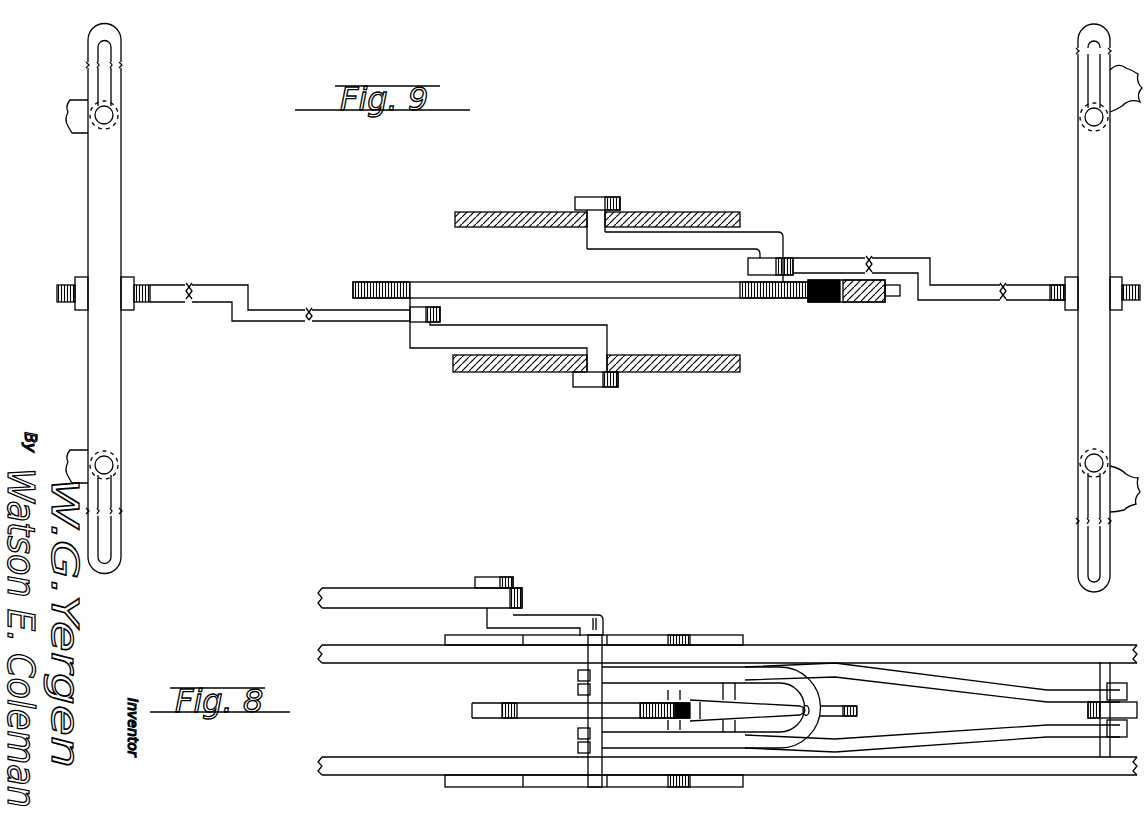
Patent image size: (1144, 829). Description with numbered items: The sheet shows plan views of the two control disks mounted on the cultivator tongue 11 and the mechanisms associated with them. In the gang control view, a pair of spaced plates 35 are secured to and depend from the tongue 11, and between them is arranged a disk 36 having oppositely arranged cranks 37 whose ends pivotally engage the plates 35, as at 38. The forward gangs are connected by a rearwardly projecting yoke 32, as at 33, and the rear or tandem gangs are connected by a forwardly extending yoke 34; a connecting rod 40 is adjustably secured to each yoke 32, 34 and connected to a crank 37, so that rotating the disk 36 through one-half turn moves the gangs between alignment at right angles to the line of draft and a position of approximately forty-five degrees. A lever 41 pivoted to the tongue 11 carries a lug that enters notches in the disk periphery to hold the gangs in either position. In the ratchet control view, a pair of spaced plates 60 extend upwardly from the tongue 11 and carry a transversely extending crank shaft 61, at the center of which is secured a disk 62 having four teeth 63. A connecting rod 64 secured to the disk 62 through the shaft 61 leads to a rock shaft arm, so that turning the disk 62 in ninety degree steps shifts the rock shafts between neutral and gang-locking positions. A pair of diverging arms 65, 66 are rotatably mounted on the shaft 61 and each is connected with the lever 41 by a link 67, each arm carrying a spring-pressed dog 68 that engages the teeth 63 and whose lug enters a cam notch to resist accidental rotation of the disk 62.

In FIG. 8, the tongue 11 is at (915, 656).
In FIG. 9, the yoke 32 is at (100, 197).
In FIG. 9, the yoke connection 33 is at (113, 113).
In FIG. 9, the forwardly extending yoke 34 is at (1080, 337).
In FIG. 9, the spaced plates 35 is at (686, 210).
In FIG. 9, the disk 36 is at (483, 280).
In FIG. 9, the cranks 37 is at (700, 246).
In FIG. 9, the pivot 38 is at (597, 196).
In FIG. 9, the connecting rod 40 is at (276, 325).
In FIG. 9, the lever 41 is at (870, 302).
In FIG. 8, the lever 41 is at (1083, 722).
In FIG. 8, the spaced plates 60 is at (641, 639).
In FIG. 8, the crank shaft 61 is at (596, 768).
In FIG. 8, the disk 62 is at (538, 718).
In FIG. 8, the teeth 63 is at (506, 720).
In FIG. 8, the connecting rod 64 is at (412, 598).
In FIG. 8, the arm 65 is at (760, 668).
In FIG. 8, the arm 66 is at (577, 689).
In FIG. 8, the link 67 is at (920, 737).
In FIG. 8, the spring-pressed dog 68 is at (740, 700).